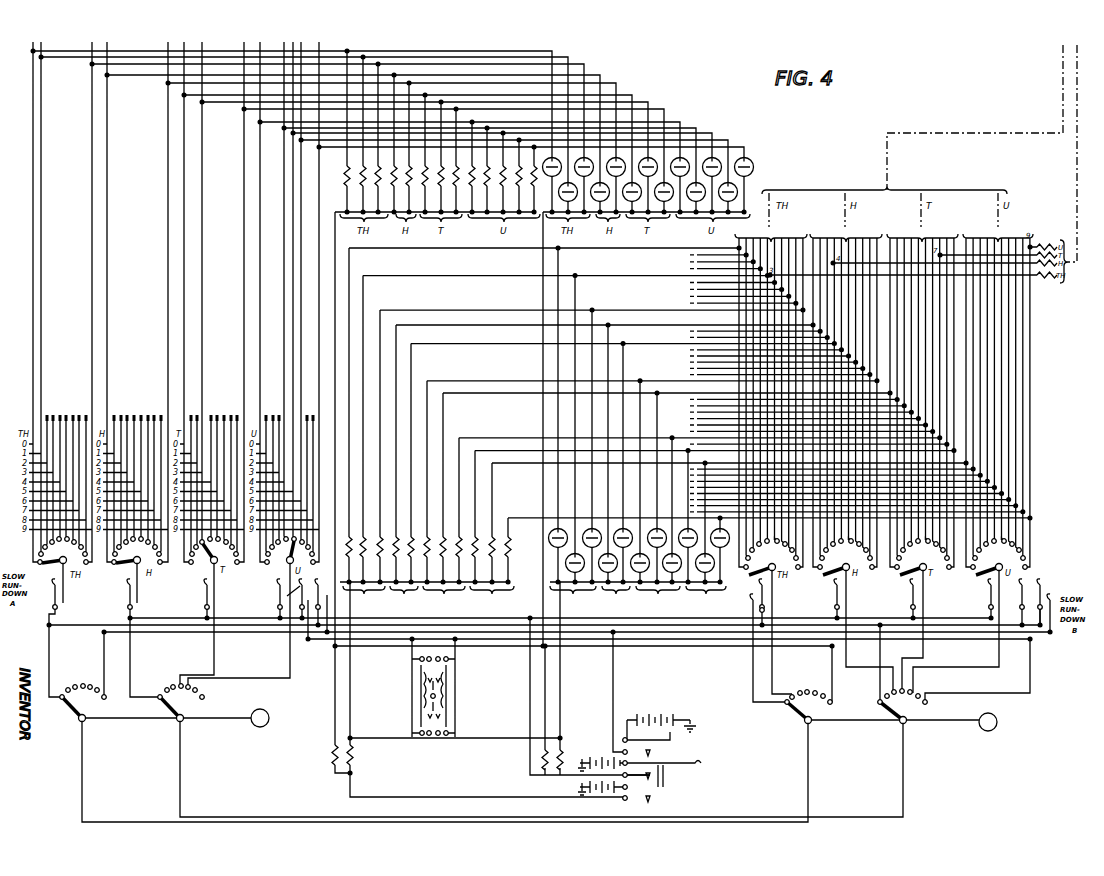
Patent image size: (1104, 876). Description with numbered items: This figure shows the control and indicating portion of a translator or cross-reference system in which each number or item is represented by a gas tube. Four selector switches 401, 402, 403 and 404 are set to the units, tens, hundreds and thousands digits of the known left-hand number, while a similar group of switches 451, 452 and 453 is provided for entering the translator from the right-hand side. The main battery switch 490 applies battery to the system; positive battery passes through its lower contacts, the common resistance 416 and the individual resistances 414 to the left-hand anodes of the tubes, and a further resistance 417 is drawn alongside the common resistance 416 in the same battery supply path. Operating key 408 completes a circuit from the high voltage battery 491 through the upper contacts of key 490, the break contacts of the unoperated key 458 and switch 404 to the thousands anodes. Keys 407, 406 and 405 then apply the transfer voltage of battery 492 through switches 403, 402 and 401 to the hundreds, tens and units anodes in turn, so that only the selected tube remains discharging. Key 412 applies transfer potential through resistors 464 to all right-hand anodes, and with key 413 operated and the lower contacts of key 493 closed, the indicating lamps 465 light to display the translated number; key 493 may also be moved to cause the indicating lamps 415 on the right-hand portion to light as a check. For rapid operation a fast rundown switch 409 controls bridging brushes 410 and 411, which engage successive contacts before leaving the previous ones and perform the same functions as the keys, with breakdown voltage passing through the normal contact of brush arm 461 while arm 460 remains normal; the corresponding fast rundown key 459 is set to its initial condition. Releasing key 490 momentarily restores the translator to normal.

The selector switch 401 is at (283, 569).
The selector switch 402 is at (205, 569).
The selector switch 403 is at (129, 568).
The selector switch 404 is at (57, 566).
The key 405 is at (277, 585).
The key 406 is at (204, 585).
The key 407 is at (127, 585).
The key 408 is at (52, 590).
The fast rundown switch 409 is at (269, 716).
The brush arm 410 is at (170, 712).
The brush arm 411 is at (72, 725).
The key 412 is at (287, 596).
The key 413 is at (343, 580).
The individual resistances 414 is at (345, 178).
The indicating lamps 415 is at (693, 158).
The common resistance 416 is at (330, 760).
The resistor 417 is at (355, 755).
The selector switch 451 is at (1003, 581).
The selector switch 452 is at (920, 587).
The selector switch 453 is at (843, 587).
The key 458 is at (766, 609).
The fast rundown key 459 is at (997, 717).
The switch arm 460 is at (882, 709).
The switch arm 461 is at (800, 726).
The resistors 464 is at (387, 490).
The indicating lamps 465 is at (655, 588).
The main battery switch 490 is at (690, 750).
The high voltage battery 491 is at (650, 714).
The transfer battery 492 is at (604, 757).
The key 493 is at (450, 696).